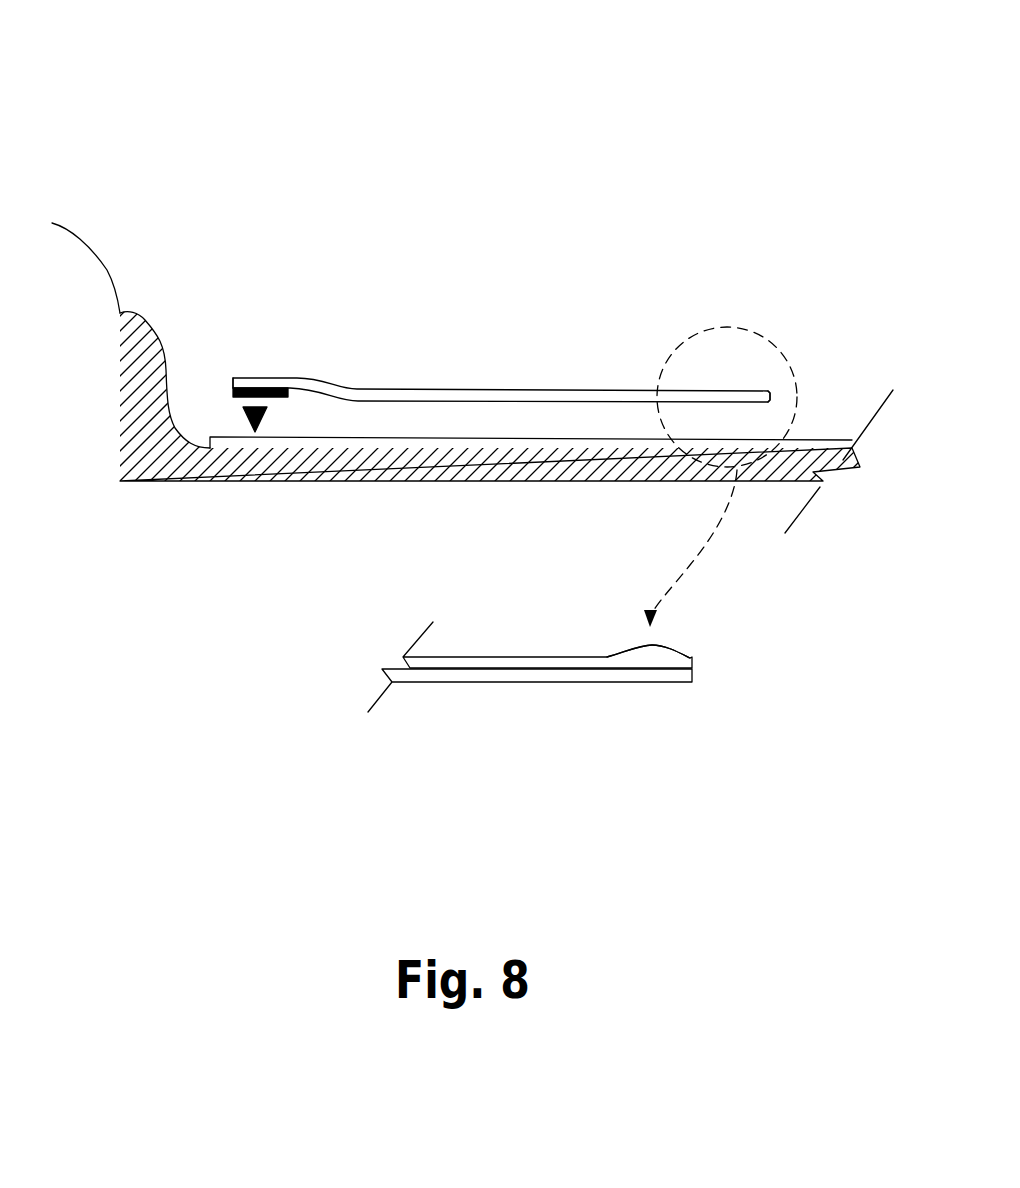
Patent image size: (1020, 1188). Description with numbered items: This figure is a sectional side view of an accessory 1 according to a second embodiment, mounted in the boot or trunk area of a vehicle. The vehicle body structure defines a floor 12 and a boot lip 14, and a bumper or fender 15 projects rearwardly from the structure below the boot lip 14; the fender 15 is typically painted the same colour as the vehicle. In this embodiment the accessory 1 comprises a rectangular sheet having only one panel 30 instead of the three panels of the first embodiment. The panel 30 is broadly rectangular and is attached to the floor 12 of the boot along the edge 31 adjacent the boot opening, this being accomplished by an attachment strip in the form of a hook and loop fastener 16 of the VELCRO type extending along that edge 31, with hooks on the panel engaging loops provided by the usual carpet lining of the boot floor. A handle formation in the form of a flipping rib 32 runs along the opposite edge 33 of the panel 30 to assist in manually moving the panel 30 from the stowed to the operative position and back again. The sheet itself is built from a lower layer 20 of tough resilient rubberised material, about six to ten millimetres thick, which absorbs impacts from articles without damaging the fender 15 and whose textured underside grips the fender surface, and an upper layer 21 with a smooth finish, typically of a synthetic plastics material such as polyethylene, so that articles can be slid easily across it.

The accessory 1 is at (378, 215).
The floor 12 is at (823, 440).
The boot lip 14 is at (155, 330).
The bumper or fender 15 is at (93, 243).
The hook and loop fastener attachment 16 is at (277, 398).
The lower layer 20 is at (458, 662).
The upper layer 21 is at (423, 681).
The panel 30 is at (550, 388).
The edge 31 is at (233, 383).
The flipping rib 32 is at (657, 643).
The opposite edge 33 is at (770, 392).